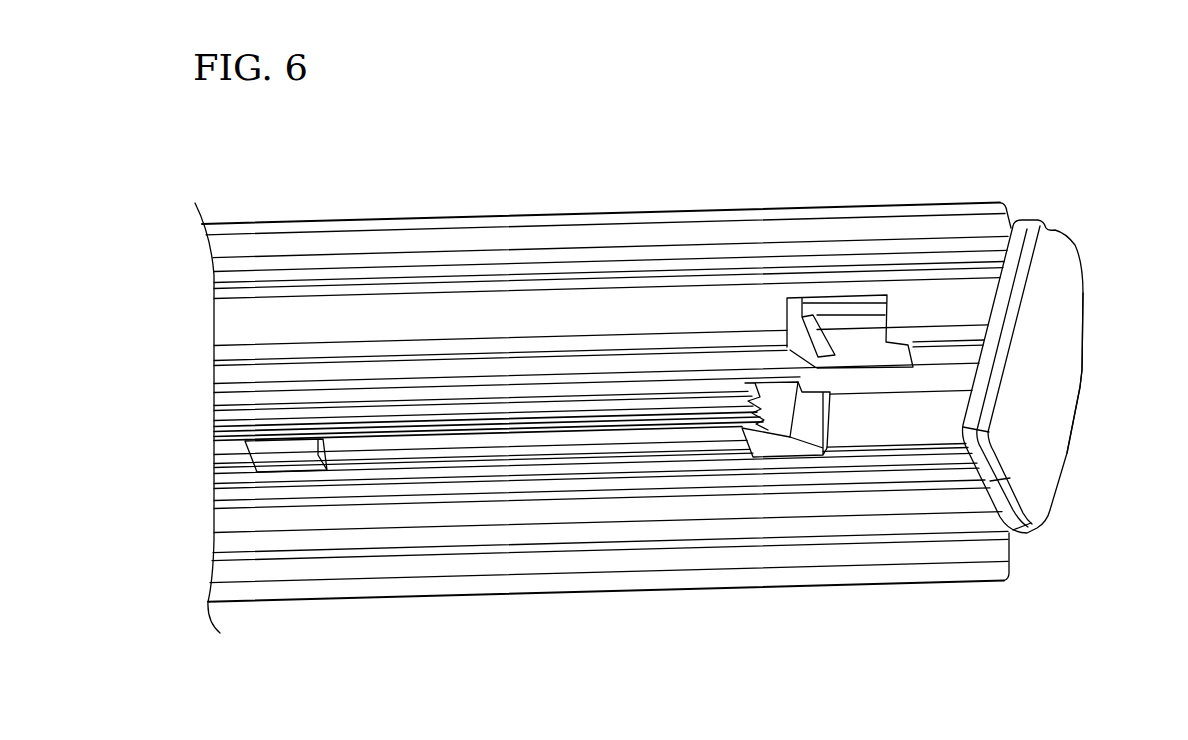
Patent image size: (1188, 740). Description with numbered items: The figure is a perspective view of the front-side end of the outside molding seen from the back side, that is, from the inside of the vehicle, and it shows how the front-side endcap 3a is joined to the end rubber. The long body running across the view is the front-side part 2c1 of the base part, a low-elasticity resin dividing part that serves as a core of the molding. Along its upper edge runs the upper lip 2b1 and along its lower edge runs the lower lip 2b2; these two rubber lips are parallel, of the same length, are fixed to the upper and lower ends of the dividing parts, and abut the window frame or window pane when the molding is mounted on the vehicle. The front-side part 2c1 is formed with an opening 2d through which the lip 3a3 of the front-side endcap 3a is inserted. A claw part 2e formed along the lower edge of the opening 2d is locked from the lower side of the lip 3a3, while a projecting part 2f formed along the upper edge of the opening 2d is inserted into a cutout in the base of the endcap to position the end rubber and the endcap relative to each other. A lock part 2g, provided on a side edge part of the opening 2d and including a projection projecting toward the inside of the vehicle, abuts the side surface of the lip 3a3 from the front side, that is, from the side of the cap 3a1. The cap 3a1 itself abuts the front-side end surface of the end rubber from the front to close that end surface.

The upper lip 2b1 is at (973, 220).
The lower lip 2b2 is at (562, 583).
The front-side part 2c1 is at (922, 432).
The claw part 2e is at (287, 447).
The projecting part 2f is at (857, 307).
The opening 2d is at (781, 393).
The lip 3a3 is at (758, 378).
The lock part 2g is at (812, 427).
The front-side endcap 3a is at (1079, 240).
The cap 3a1 is at (1063, 317).